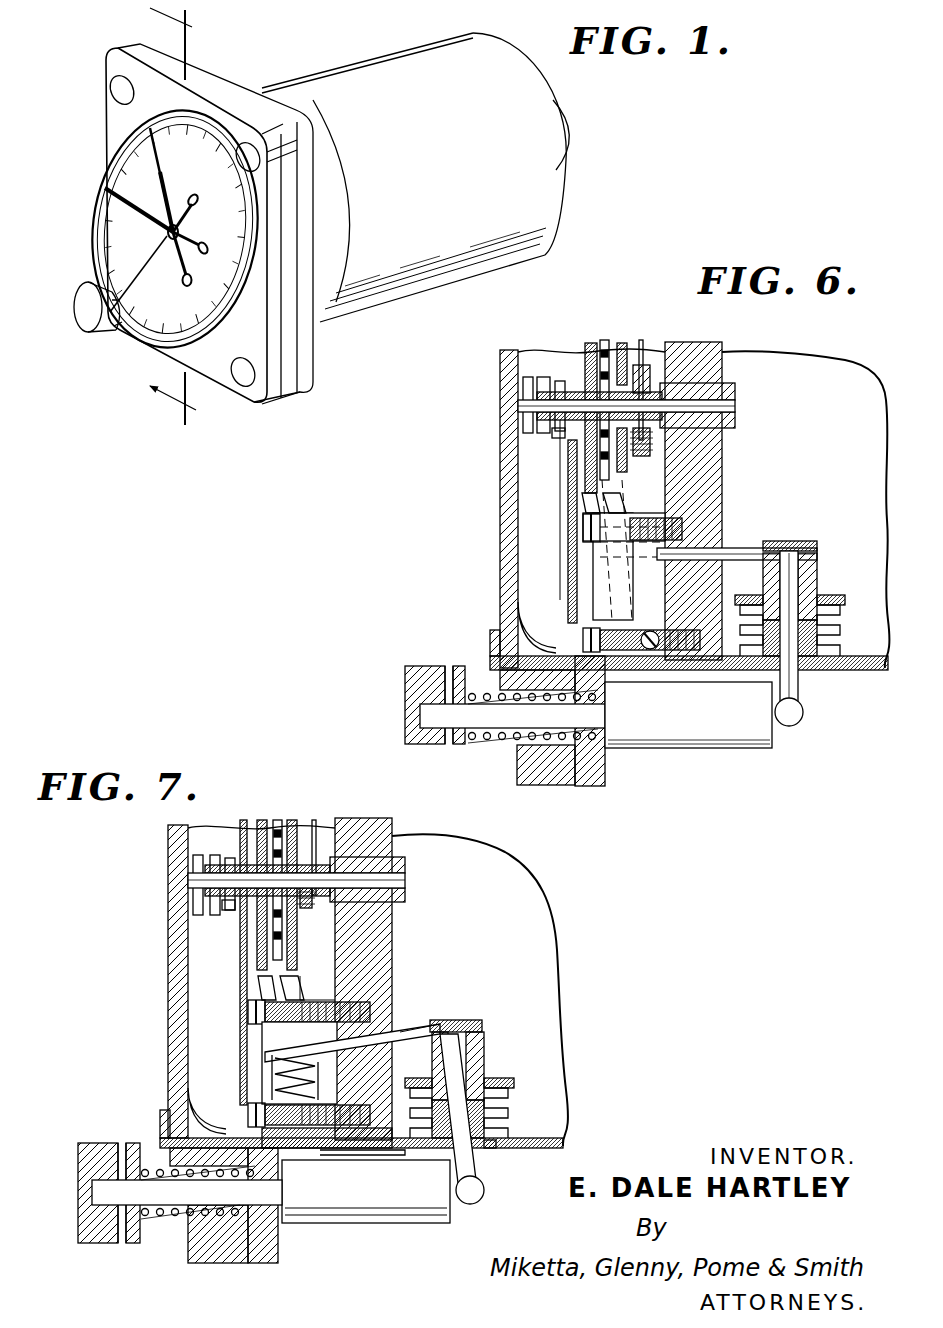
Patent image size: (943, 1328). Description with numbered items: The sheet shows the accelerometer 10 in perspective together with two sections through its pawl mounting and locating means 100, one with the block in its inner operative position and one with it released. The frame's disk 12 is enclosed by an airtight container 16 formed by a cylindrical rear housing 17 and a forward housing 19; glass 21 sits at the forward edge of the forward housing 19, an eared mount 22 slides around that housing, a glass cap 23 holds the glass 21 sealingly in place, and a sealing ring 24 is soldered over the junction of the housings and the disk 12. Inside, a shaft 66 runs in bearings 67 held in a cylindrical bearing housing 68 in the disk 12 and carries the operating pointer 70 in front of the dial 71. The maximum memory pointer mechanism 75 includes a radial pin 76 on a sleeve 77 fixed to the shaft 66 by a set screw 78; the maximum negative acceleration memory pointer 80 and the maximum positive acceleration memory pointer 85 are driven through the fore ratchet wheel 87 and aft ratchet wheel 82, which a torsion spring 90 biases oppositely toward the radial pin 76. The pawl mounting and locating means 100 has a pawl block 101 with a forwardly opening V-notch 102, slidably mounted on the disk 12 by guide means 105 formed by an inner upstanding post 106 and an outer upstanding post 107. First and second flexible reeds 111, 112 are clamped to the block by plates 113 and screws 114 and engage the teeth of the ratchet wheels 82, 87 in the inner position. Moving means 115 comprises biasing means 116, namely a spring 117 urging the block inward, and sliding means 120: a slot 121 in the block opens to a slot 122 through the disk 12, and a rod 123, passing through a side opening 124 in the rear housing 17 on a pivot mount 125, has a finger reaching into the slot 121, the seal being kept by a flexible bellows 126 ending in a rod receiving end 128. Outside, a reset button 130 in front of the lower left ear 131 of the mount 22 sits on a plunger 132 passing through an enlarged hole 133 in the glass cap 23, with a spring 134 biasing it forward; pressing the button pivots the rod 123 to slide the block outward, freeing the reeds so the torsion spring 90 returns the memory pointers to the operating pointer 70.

In FIG. 1, the accelerometer 10 is at (136, 420).
In FIG. 6, the disk 12 is at (706, 346).
In FIG. 7, the disk 12 is at (360, 828).
In FIG. 1, the airtight container 16 is at (400, 52).
In FIG. 1, the cylindrical rear housing 17 is at (552, 193).
In FIG. 1, the forward housing 19 is at (246, 400).
In FIG. 1, the glass 21 is at (118, 178).
In FIG. 6, the glass 21 is at (500, 358).
In FIG. 7, the glass 21 is at (168, 828).
In FIG. 1, the eared mount 22 is at (306, 345).
In FIG. 1, the glass cap 23 is at (272, 406).
In FIG. 1, the sealing ring 24 is at (268, 84).
In FIG. 6, the shaft 66 is at (736, 406).
In FIG. 7, the shaft 66 is at (406, 881).
In FIG. 6, the bearings 67 is at (645, 370).
In FIG. 6, the bearing collar 68 is at (734, 388).
In FIG. 7, the bearing collar 68 is at (400, 860).
In FIG. 1, the operating pointer 70 is at (110, 200).
In FIG. 6, the operating pointer 70 is at (525, 390).
In FIG. 7, the operating pointer 70 is at (195, 862).
In FIG. 1, the dial 71 is at (108, 148).
In FIG. 6, the dial 71 is at (568, 578).
In FIG. 7, the dial 71 is at (242, 822).
In FIG. 6, the maximum memory pointer mechanism 75 is at (572, 478).
In FIG. 6, the radial pin 76 is at (641, 342).
In FIG. 7, the radial pin 76 is at (314, 820).
In FIG. 6, the sleeve 77 is at (680, 420).
In FIG. 6, the set screw 78 is at (660, 436).
In FIG. 7, the set screw 78 is at (306, 894).
In FIG. 1, the maximum negative acceleration memory pointer 80 is at (168, 158).
In FIG. 6, the maximum negative acceleration memory pointer 80 is at (560, 381).
In FIG. 7, the maximum negative acceleration memory pointer 80 is at (228, 895).
In FIG. 6, the aft ratchet wheel 82 is at (622, 343).
In FIG. 7, the aft ratchet wheel 82 is at (298, 936).
In FIG. 1, the maximum positive acceleration memory pointer 85 is at (155, 265).
In FIG. 6, the maximum positive acceleration memory pointer 85 is at (555, 432).
In FIG. 7, the maximum positive acceleration memory pointer 85 is at (226, 910).
In FIG. 6, the fore ratchet wheel 87 is at (590, 343).
In FIG. 7, the fore ratchet wheel 87 is at (258, 940).
In FIG. 6, the torsion spring 90 is at (605, 340).
In FIG. 7, the torsion spring 90 is at (278, 820).
In FIG. 7, the pawl mounting and locating means 100 is at (440, 1014).
In FIG. 6, the pawl block 101 is at (660, 512).
In FIG. 7, the pawl block 101 is at (292, 986).
In FIG. 7, the V-notch 102 is at (262, 1030).
In FIG. 6, the guide means 105 is at (552, 627).
In FIG. 6, the inner upstanding post 106 is at (682, 528).
In FIG. 7, the inner upstanding post 106 is at (262, 1012).
In FIG. 6, the outer upstanding post 107 is at (690, 652).
In FIG. 7, the outer upstanding post 107 is at (300, 1122).
In FIG. 6, the first elongated flexible reed 111 is at (594, 500).
In FIG. 7, the first elongated flexible reed 111 is at (300, 976).
In FIG. 6, the second elongated flexible reed 112 is at (595, 513).
In FIG. 7, the second elongated flexible reed 112 is at (262, 990).
In FIG. 6, the plates 113 is at (560, 640).
In FIG. 6, the screws 114 is at (650, 650).
In FIG. 6, the moving means 115 is at (817, 538).
In FIG. 7, the biasing means 116 is at (270, 1072).
In FIG. 7, the spring 117 is at (212, 1114).
In FIG. 6, the sliding means 120 is at (789, 629).
In FIG. 7, the sliding means 120 is at (494, 1046).
In FIG. 7, the slot 121 is at (268, 1052).
In FIG. 6, the slot 122 is at (700, 560).
In FIG. 7, the slot 122 is at (402, 1026).
In FIG. 6, the rod 123 is at (804, 712).
In FIG. 7, the rod 123 is at (466, 1196).
In FIG. 7, the side opening 124 is at (490, 1148).
In FIG. 6, the pivot mount 125 is at (845, 650).
In FIG. 7, the pivot mount 125 is at (512, 1116).
In FIG. 6, the flexible bellows 126 is at (817, 555).
In FIG. 7, the flexible bellows 126 is at (450, 1032).
In FIG. 6, the rod receiving end 128 is at (820, 548).
In FIG. 7, the rod receiving end 128 is at (482, 1024).
In FIG. 1, the reset button 130 is at (85, 305).
In FIG. 6, the reset button 130 is at (403, 688).
In FIG. 7, the reset button 130 is at (78, 1160).
In FIG. 1, the lower left ear 131 is at (120, 326).
In FIG. 6, the lower left ear 131 is at (596, 784).
In FIG. 7, the lower left ear 131 is at (258, 1266).
In FIG. 6, the plunger 132 is at (672, 730).
In FIG. 7, the plunger 132 is at (92, 1192).
In FIG. 6, the enlarged hole 133 is at (545, 760).
In FIG. 7, the enlarged hole 133 is at (215, 1220).
In FIG. 6, the spring 134 is at (496, 756).
In FIG. 7, the spring 134 is at (152, 1216).